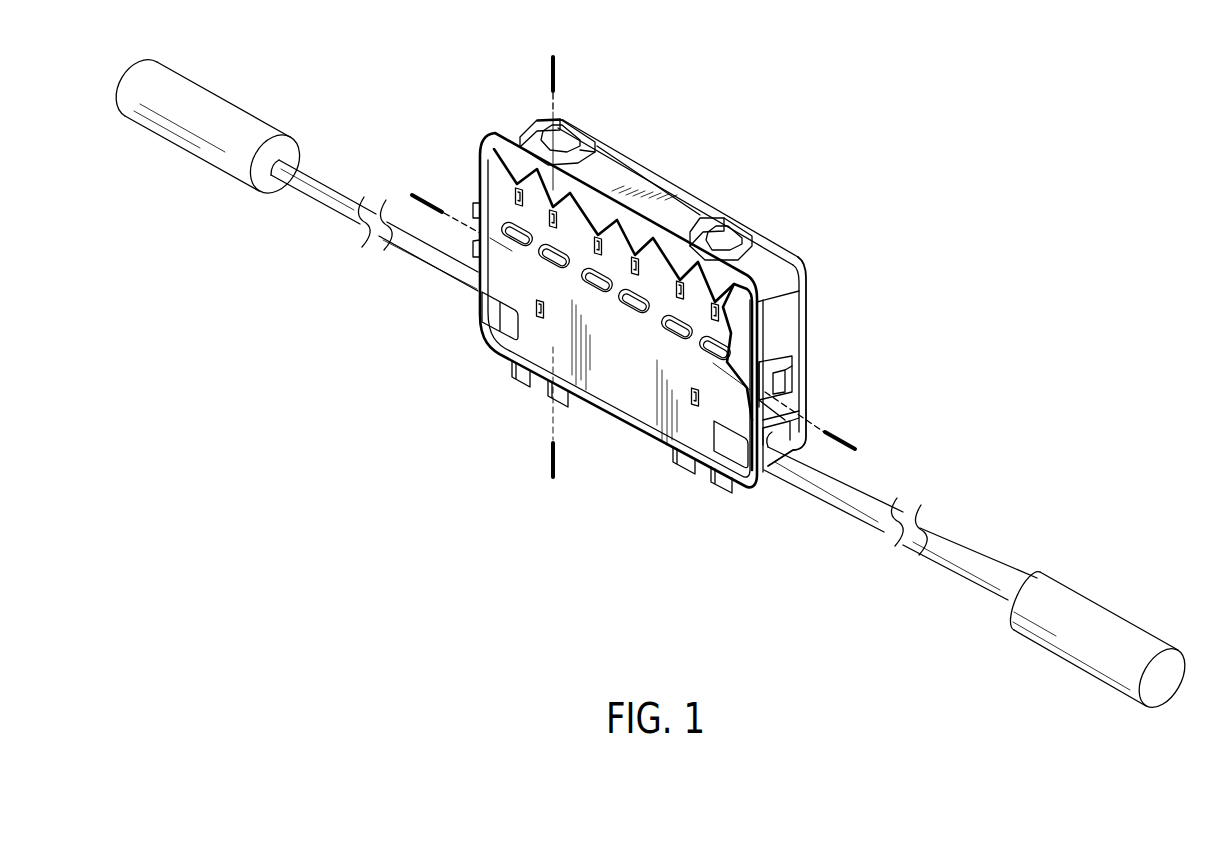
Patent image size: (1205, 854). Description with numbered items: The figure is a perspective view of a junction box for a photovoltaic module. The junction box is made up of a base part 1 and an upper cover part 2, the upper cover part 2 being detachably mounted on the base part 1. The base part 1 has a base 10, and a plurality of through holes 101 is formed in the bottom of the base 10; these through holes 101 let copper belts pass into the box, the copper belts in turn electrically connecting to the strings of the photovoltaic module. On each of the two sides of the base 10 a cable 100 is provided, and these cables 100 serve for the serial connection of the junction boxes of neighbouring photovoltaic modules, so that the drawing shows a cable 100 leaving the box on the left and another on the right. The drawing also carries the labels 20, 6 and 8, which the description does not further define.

The base part 1 is at (665, 317).
The upper cover part 2 is at (689, 287).
The base 10 is at (621, 394).
The cover 20 is at (624, 183).
The cable 100 is at (327, 197).
The through hole 101 is at (723, 331).
The section line 6- 6 is at (426, 225).
The section line 8- 8 is at (538, 62).